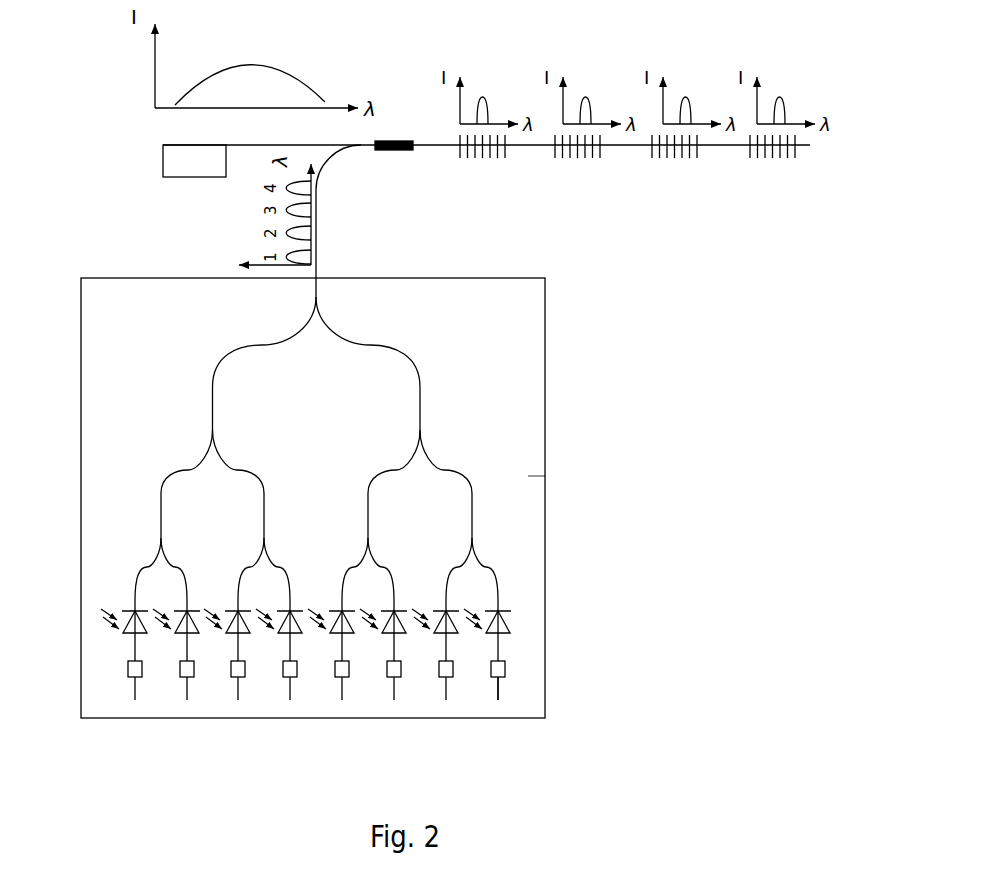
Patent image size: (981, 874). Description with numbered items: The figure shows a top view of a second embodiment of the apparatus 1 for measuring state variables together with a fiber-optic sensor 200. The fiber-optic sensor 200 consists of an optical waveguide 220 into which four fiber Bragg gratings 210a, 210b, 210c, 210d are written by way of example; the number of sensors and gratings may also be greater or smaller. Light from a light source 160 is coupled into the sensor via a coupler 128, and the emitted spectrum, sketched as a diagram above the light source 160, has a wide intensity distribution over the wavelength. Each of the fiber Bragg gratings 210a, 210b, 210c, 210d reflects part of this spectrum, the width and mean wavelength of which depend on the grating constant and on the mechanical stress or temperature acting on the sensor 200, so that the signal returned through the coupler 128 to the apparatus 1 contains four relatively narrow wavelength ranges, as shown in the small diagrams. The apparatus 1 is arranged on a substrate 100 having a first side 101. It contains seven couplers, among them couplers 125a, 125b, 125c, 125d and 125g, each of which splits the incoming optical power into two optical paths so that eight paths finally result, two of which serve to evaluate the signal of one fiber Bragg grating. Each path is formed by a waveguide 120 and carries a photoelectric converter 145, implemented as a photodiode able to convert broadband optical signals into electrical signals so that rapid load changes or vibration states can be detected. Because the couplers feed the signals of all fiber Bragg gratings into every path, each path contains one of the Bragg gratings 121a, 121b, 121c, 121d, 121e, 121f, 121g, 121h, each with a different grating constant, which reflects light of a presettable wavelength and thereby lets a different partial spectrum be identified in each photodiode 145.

The apparatus 1 is at (560, 327).
The substrate 100 is at (545, 375).
The first side 101 is at (530, 477).
The waveguide 120 is at (502, 688).
The Bragg grating 121a is at (128, 668).
The Bragg grating 121b is at (180, 668).
The Bragg grating 121c is at (231, 668).
The Bragg grating 121d is at (283, 668).
The Bragg grating 121e is at (335, 668).
The Bragg grating 121f is at (387, 668).
The Bragg grating 121g is at (439, 668).
The Bragg grating 121h is at (491, 668).
The coupler 125a is at (320, 299).
The coupler 125b is at (422, 430).
The coupler 125c is at (211, 430).
The coupler 125d is at (153, 557).
The coupler 125g is at (480, 558).
The coupler 128 is at (393, 152).
The photoelectric converter 145 is at (512, 628).
The light source 160 is at (190, 165).
The fiber-optic sensor 200 is at (820, 74).
The fiber Bragg grating 210a is at (483, 162).
The fiber Bragg grating 210b is at (579, 162).
The fiber Bragg grating 210c is at (676, 162).
The fiber Bragg grating 210d is at (774, 162).
The optical waveguide 220 is at (806, 148).